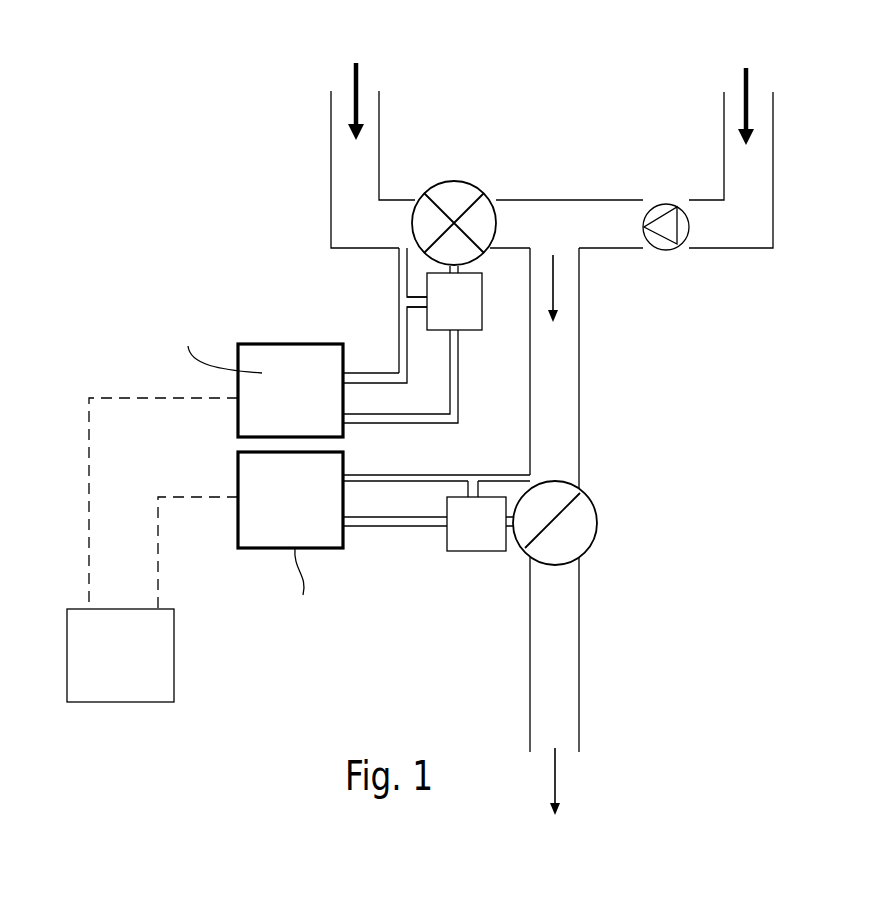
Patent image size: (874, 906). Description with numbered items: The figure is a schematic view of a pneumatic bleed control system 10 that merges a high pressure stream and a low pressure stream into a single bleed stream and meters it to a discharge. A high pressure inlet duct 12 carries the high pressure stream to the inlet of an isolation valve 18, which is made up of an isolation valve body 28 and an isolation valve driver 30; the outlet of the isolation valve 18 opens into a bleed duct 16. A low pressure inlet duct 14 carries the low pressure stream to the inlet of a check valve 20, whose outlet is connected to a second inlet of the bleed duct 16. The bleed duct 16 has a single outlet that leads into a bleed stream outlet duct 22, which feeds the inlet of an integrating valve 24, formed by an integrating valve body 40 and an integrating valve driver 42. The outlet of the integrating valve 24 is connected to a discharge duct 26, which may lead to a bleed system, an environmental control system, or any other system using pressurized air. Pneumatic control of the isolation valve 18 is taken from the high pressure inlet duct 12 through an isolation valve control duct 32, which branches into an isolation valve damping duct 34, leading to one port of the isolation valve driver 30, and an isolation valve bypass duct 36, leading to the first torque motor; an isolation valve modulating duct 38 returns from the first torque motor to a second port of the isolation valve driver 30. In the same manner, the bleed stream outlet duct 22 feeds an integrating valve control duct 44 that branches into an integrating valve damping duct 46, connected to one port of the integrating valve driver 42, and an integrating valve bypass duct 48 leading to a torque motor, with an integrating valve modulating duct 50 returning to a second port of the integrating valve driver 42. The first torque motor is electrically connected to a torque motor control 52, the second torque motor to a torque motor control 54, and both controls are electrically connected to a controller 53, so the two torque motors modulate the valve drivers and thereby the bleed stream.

The bleed control system 10 is at (165, 163).
The high pressure inlet duct 12 is at (331, 152).
The low pressure inlet duct 14 is at (773, 129).
The bleed duct 16 is at (534, 218).
The isolation valve 18 is at (440, 177).
The check valve 20 is at (666, 210).
The bleed stream outlet duct 22 is at (558, 351).
The integrating valve 24 is at (608, 503).
The discharge duct 26 is at (563, 640).
The isolation valve body 28 is at (455, 200).
The isolation valve driver 30 is at (467, 312).
The isolation valve control duct 32 is at (399, 273).
The isolation valve damping duct 34 is at (417, 305).
The isolation valve bypass duct 36 is at (399, 338).
The isolation valve modulating duct 38 is at (458, 397).
The integrating valve body 40 is at (575, 538).
The integrating valve driver 42 is at (465, 551).
The integrating valve control duct 44 is at (495, 474).
The integrating valve damping duct 46 is at (468, 487).
The integrating valve bypass duct 48 is at (372, 475).
The integrating valve modulating duct 50 is at (380, 527).
The torque motor control 52 is at (89, 565).
The controller 53 is at (120, 705).
The torque motor control 54 is at (158, 588).